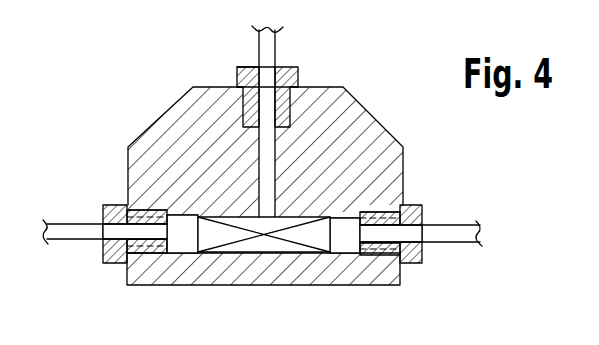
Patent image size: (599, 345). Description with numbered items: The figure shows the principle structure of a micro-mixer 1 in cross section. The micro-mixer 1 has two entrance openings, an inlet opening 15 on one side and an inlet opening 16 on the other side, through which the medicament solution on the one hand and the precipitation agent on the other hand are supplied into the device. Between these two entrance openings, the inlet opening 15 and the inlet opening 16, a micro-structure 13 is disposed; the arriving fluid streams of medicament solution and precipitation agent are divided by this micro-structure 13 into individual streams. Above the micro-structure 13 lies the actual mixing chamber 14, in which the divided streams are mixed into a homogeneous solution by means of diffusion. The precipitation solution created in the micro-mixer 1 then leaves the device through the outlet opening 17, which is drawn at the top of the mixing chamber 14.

The micro-mixer 1 is at (147, 99).
The micro-structure 13 is at (255, 242).
The mixing chamber 14 is at (262, 165).
The inlet opening 15 is at (152, 237).
The inlet opening 16 is at (375, 237).
The outlet opening 17 is at (308, 88).